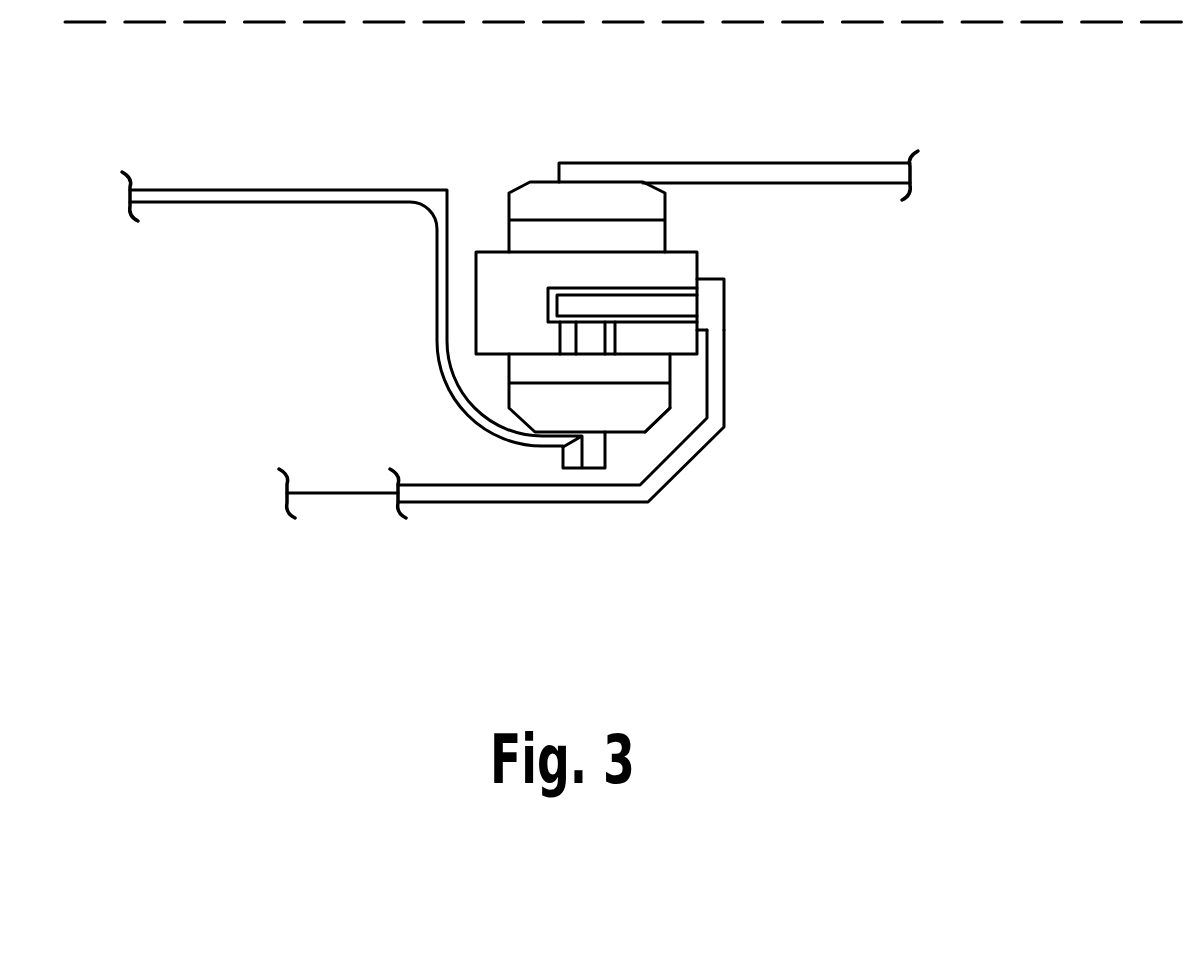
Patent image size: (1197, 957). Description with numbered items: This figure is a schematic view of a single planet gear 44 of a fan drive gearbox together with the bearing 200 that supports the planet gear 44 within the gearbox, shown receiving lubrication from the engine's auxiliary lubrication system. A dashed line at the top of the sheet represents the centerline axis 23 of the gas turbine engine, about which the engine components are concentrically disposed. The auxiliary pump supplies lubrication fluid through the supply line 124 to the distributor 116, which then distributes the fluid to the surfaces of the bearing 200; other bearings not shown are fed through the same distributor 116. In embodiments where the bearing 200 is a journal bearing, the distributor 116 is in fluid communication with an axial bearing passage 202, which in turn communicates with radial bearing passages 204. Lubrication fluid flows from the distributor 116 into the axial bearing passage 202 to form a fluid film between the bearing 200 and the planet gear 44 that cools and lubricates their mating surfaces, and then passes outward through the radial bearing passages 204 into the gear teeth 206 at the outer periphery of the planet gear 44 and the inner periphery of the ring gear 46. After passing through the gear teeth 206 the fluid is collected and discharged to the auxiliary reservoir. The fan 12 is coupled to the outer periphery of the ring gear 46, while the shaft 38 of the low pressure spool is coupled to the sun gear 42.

The fan 12 is at (215, 190).
The centerline axis 23 is at (1107, 23).
The shaft 38 is at (853, 163).
The sun gear 42 is at (668, 193).
The planet gear 44 is at (699, 338).
The ring gear 46 is at (653, 422).
The distributor 116 is at (592, 503).
The supply line 124 is at (340, 493).
The bearing 200 is at (698, 279).
The axial bearing passage 202 is at (676, 306).
The radial bearing passages 204 is at (608, 352).
The gear teeth 206 is at (655, 372).